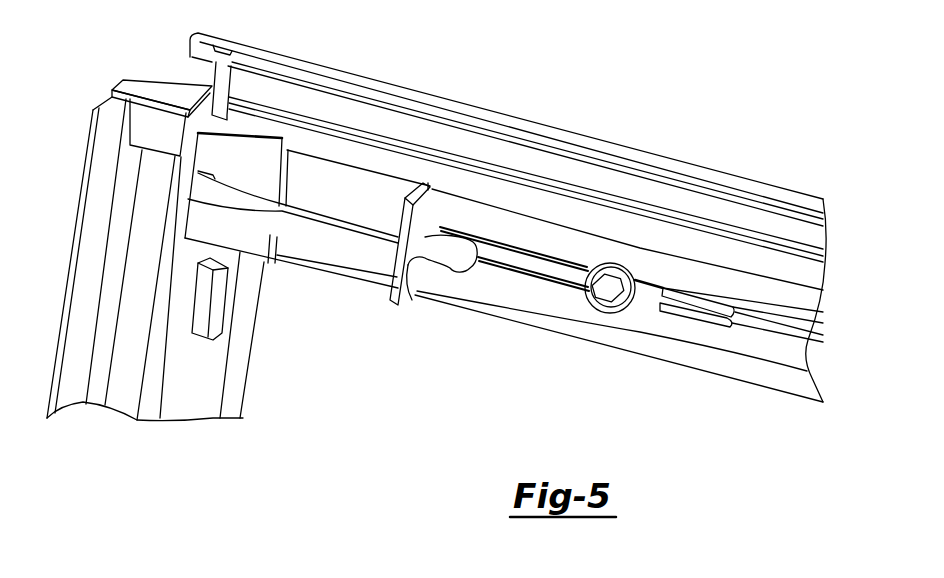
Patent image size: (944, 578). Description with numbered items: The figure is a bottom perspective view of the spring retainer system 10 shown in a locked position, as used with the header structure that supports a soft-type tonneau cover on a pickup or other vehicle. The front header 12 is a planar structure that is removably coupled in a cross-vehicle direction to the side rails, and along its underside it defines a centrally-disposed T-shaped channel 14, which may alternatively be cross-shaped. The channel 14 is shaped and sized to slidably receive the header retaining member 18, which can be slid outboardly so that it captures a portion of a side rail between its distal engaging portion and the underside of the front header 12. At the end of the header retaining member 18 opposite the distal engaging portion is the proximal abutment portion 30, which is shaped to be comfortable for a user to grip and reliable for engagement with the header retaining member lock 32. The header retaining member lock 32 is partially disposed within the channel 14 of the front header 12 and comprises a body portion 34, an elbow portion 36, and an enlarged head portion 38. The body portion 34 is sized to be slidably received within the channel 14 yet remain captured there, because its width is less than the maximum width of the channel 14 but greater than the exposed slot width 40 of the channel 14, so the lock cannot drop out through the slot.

The spring retainer system 10 is at (402, 427).
The front header 12 is at (775, 192).
The T-shaped channel 14 is at (807, 313).
The header retaining member 18 is at (327, 288).
The proximal abutment portion 30 is at (420, 203).
The header retaining member lock 32 is at (650, 295).
The body portion 34 is at (707, 310).
The elbow portion 36 is at (409, 298).
The enlarged head portion 38 is at (468, 273).
The exposed slot width 40 is at (797, 340).